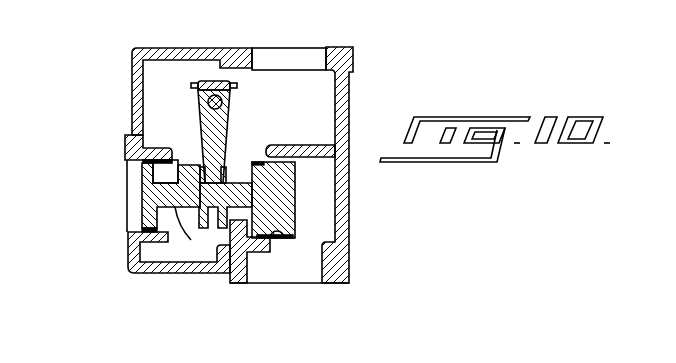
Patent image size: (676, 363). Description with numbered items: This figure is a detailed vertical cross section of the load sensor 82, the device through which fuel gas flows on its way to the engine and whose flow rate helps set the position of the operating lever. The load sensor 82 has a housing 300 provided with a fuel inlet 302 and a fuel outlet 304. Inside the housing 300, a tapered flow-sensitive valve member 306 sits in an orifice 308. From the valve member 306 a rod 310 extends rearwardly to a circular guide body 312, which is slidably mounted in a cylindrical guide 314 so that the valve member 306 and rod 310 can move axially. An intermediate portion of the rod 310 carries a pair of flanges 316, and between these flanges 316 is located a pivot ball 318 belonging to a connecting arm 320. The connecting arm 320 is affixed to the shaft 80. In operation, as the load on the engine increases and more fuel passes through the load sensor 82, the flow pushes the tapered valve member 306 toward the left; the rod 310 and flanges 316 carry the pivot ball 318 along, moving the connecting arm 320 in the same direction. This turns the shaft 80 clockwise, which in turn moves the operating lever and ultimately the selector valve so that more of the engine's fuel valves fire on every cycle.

The shaft 80 is at (232, 103).
The load sensor 82 is at (129, 104).
The housing 300 is at (190, 265).
The fuel inlet 302 is at (256, 270).
The fuel outlet 304 is at (266, 48).
The tapered flow-sensitive valve member 306 is at (288, 162).
The orifice 308 is at (281, 236).
The rod 310 is at (178, 230).
The circular guide body 312 is at (141, 197).
The cylindrical guide 314 is at (127, 160).
The flanges 316 is at (207, 168).
The pivot ball 318 is at (204, 177).
The connecting arm 320 is at (203, 125).